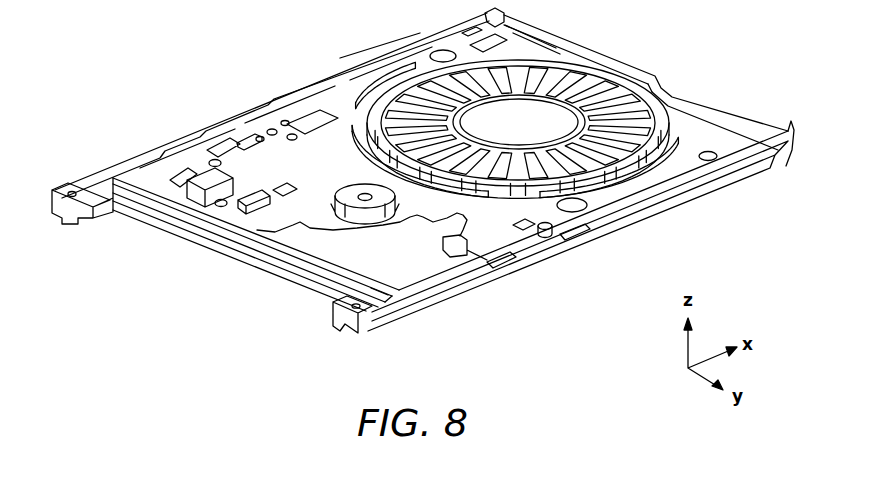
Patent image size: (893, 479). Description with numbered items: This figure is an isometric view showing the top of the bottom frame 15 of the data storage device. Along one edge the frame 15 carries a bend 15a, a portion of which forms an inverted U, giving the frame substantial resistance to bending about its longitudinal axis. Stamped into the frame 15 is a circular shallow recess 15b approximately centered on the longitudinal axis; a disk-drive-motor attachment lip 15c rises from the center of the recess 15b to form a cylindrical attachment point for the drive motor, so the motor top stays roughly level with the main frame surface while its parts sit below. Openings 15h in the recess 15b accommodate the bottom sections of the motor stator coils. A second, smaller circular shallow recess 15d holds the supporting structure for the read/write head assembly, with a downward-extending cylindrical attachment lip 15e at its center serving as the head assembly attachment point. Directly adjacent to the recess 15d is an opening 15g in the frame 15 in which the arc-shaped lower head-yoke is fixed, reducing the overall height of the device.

The frame 15 is at (212, 101).
The bend 15a is at (688, 107).
The shallow recess 15b is at (527, 62).
The disk-drive-motor attachment lip 15c is at (487, 113).
The shallow recess 15d is at (252, 232).
The downward-extending cylindrical attachment lip 15e is at (365, 190).
The opening 15g is at (367, 252).
The opening 15h is at (558, 80).